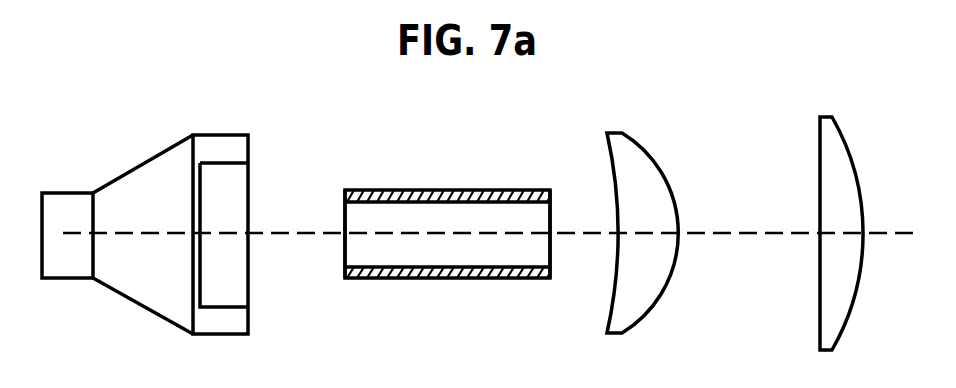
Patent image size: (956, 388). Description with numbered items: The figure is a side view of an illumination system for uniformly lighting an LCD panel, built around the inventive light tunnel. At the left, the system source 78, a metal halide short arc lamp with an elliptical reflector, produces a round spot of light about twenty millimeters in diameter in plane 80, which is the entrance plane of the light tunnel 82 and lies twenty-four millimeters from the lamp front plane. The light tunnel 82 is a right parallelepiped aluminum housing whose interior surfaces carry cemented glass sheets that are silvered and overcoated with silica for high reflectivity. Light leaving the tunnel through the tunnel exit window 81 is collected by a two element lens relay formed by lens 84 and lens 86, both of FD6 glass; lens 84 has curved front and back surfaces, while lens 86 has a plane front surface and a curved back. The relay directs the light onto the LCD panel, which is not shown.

The system source 78 is at (222, 112).
The entrance plane 80 is at (345, 245).
The tunnel exit window 81 is at (551, 213).
The light tunnel 82 is at (433, 163).
The lens 84 is at (655, 303).
The lens 86 is at (855, 163).